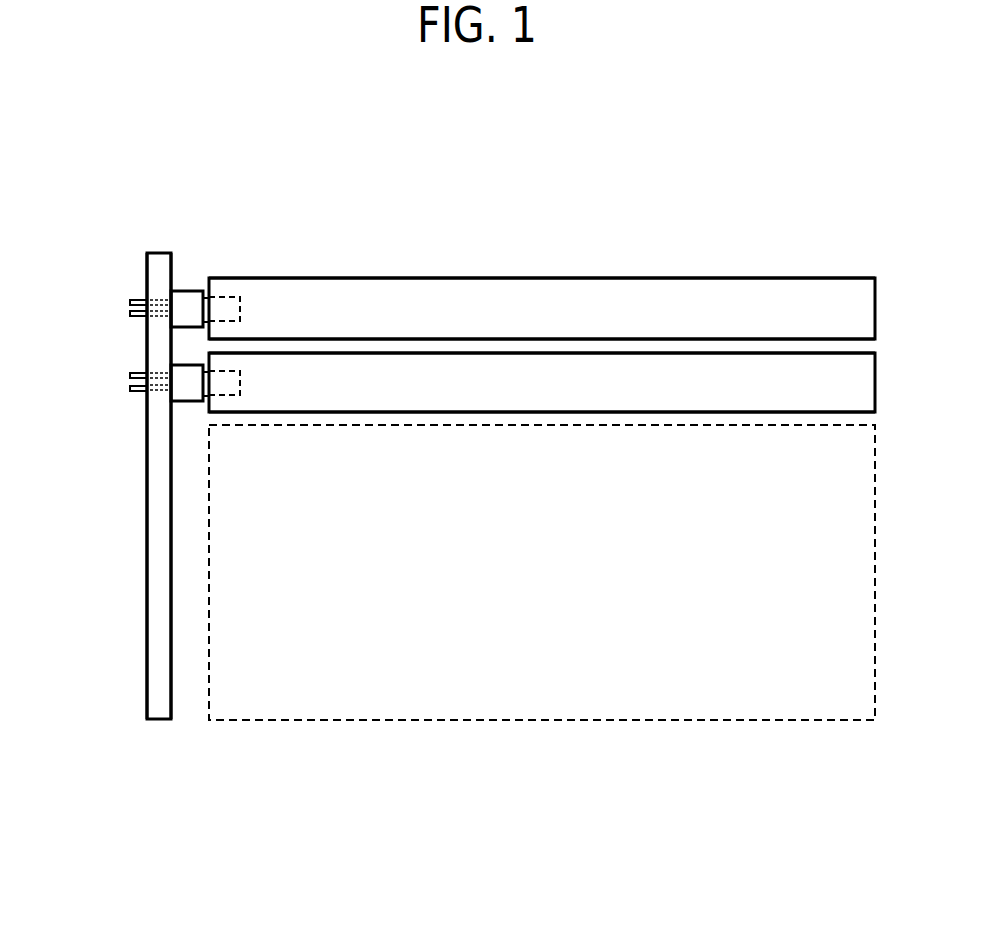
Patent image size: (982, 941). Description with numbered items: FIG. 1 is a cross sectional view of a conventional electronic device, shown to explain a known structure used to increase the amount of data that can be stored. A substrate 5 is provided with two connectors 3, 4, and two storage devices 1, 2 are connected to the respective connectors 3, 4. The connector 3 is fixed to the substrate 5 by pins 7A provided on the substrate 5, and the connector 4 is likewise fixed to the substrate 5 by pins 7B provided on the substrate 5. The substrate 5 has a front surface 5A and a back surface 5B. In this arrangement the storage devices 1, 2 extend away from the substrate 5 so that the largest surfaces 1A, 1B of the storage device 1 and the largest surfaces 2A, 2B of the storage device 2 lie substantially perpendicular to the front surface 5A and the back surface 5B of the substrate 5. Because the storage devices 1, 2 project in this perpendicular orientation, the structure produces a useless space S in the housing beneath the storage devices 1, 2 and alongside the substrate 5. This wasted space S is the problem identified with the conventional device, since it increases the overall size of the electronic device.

The storage device 1 is at (751, 290).
The largest surface 1A is at (475, 278).
The largest surface 1B is at (622, 335).
The storage device 2 is at (778, 400).
The largest surface 2A is at (493, 352).
The largest surface 2B is at (588, 412).
The connector 3 is at (232, 298).
The connector 4 is at (226, 398).
The substrate 5 is at (155, 630).
The front surface 5A is at (171, 553).
The back surface 5B is at (147, 563).
The pins 7A is at (136, 300).
The pins 7B is at (140, 393).
The useless space S is at (613, 705).